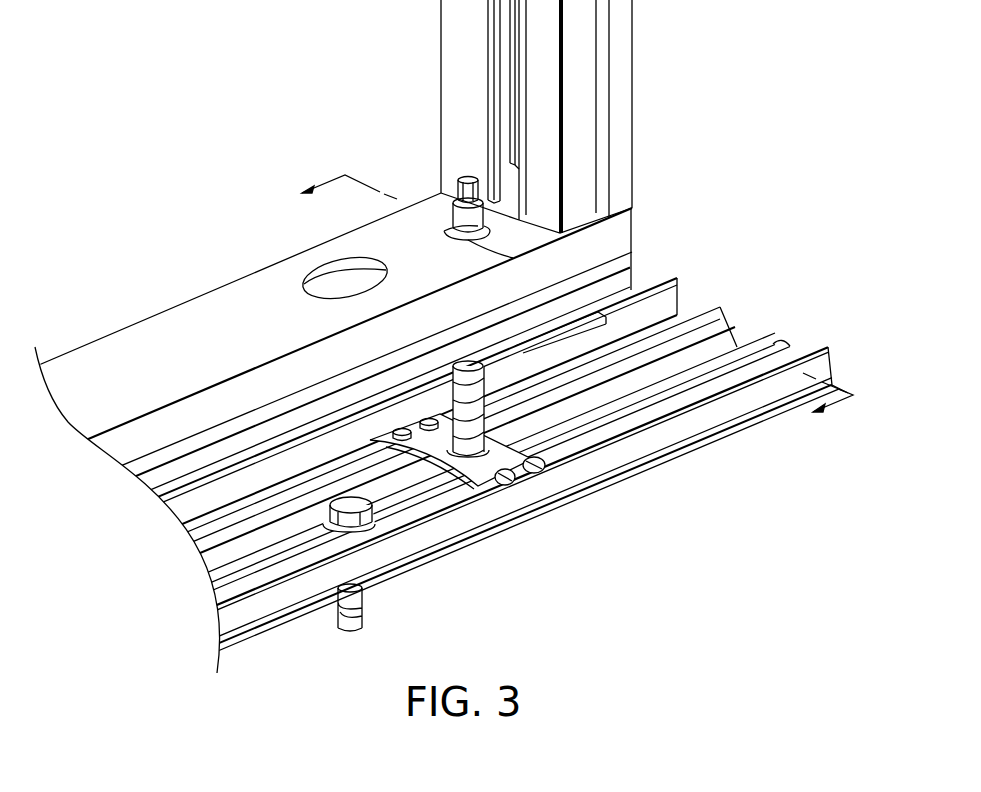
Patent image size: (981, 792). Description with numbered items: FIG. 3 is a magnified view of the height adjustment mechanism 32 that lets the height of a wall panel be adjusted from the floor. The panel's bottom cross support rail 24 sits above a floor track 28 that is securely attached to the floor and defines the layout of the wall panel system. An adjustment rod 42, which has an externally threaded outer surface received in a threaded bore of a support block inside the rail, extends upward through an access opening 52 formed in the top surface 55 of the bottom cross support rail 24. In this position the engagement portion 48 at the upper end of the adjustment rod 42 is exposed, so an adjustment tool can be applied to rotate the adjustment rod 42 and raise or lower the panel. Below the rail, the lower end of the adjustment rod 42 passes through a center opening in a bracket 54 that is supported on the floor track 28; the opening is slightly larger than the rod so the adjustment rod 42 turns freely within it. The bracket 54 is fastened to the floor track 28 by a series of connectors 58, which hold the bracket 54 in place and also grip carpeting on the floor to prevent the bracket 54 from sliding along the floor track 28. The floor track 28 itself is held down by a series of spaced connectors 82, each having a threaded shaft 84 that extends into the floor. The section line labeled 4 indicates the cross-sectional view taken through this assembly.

The section line 4- 4 is at (566, 306).
The bottom cross support rail 24 is at (240, 275).
The floor track 28 is at (725, 412).
The height adjustment mechanism 32 is at (437, 405).
The adjustment rod 42 is at (448, 212).
The engagement portion 48 is at (456, 190).
The access opening 52 is at (468, 234).
The bracket 54 is at (487, 473).
The top surface 55 is at (95, 360).
The connectors 58 is at (513, 482).
The spaced connectors 82 is at (363, 515).
The threaded shaft 84 is at (348, 605).